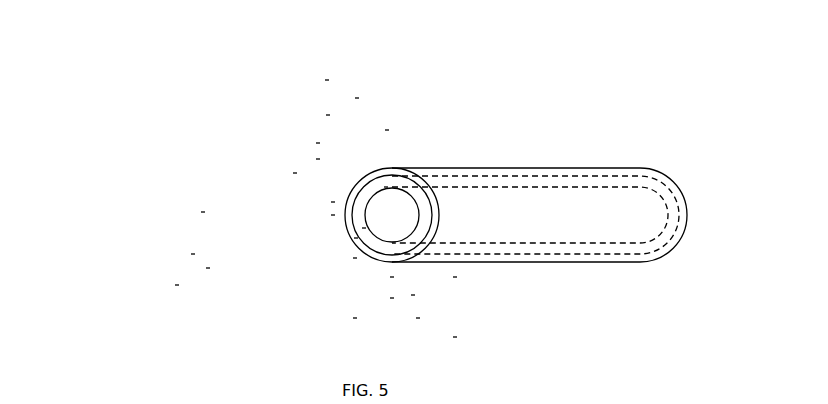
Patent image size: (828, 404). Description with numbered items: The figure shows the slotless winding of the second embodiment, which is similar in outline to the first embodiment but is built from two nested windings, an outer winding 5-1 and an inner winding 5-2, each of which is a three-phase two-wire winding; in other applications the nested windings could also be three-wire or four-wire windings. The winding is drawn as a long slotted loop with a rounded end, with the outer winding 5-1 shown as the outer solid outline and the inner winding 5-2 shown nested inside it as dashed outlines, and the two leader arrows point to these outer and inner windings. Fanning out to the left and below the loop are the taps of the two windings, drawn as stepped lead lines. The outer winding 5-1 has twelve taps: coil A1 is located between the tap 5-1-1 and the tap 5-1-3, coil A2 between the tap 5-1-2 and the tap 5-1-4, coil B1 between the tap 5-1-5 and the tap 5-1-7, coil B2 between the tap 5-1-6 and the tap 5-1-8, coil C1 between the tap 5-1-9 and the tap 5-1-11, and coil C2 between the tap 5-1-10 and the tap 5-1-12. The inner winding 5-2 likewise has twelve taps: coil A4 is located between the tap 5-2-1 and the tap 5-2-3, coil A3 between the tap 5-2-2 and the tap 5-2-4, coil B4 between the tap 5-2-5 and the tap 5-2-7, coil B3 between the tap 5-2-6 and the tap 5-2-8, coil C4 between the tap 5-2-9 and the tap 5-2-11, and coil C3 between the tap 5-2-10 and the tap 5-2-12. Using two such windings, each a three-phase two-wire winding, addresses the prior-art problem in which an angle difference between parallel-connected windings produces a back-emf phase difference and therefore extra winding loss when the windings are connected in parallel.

The outer winding 5-1 is at (392, 167).
The inner winding 5-2 is at (422, 202).
The tap of the outer winding 5-1-1 is at (268, 118).
The tap of the outer winding 5-1-2 is at (298, 144).
The tap of the outer winding 5-1-3 is at (358, 238).
The tap of the outer winding 5-1-4 is at (130, 251).
The tap of the outer winding 5-1-5 is at (137, 258).
The tap of the outer winding 5-1-6 is at (122, 281).
The tap of the outer winding 5-1-7 is at (311, 263).
The tap of the outer winding 5-1-8 is at (339, 272).
The tap of the outer winding 5-1-9 is at (329, 292).
The tap of the outer winding 5-1-10 is at (309, 313).
The tap of the outer winding 5-1-11 is at (268, 84).
The tap of the outer winding 5-1-12 is at (283, 109).
The tap of the inner winding 5-2-1 is at (235, 175).
The tap of the inner winding 5-2-2 is at (388, 187).
The tap of the inner winding 5-2-3 is at (167, 215).
The tap of the inner winding 5-2-4 is at (366, 228).
The tap of the inner winding 5-2-5 is at (283, 210).
The tap of the inner winding 5-2-6 is at (333, 215).
The tap of the inner winding 5-2-7 is at (478, 311).
The tap of the inner winding 5-2-8 is at (496, 332).
The tap of the inner winding 5-2-9 is at (474, 266).
The tap of the inner winding 5-2-10 is at (500, 281).
The tap of the inner winding 5-2-11 is at (267, 146).
The tap of the inner winding 5-2-12 is at (271, 168).